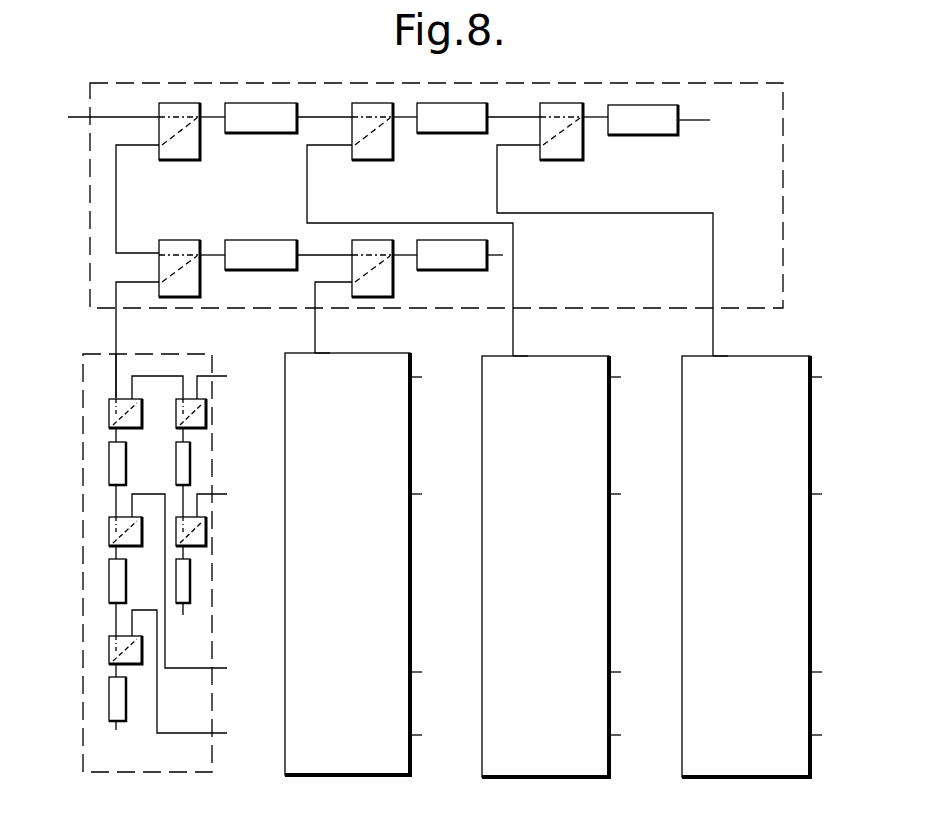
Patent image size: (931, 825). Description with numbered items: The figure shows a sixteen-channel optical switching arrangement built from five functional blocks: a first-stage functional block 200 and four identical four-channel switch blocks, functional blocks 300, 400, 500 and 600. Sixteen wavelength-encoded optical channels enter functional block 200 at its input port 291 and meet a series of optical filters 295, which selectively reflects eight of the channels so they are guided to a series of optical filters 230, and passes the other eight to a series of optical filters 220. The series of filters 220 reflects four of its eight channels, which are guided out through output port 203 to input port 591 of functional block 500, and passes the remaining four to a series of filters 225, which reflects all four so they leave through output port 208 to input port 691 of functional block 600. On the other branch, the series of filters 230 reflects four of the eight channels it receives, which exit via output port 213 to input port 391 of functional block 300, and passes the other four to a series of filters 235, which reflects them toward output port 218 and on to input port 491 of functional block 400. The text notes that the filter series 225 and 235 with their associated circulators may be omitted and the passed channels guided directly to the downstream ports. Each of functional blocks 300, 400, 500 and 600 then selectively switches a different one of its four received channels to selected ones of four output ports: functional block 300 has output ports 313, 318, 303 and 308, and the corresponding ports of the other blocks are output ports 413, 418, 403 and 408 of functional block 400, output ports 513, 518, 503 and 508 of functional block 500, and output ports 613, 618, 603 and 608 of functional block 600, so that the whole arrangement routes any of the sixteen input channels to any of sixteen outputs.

The functional block 200 is at (752, 187).
The input port 291 is at (90, 117).
The series of optical filters 295 is at (263, 125).
The series of optical filters 220 is at (452, 123).
The series of optical filters 225 is at (636, 123).
The series of optical filters 230 is at (288, 263).
The series of optical filters 235 is at (436, 263).
The output port 213 is at (114, 303).
The output port 218 is at (314, 318).
The output port 203 is at (512, 312).
The output port 208 is at (712, 311).
The functional block 300 is at (138, 763).
The input port 391 is at (117, 356).
The output port 313 is at (219, 378).
The output port 318 is at (219, 496).
The output port 303 is at (219, 667).
The output port 308 is at (219, 735).
The functional block 400 is at (338, 767).
The input port 491 is at (316, 352).
The output port 413 is at (421, 378).
The output port 418 is at (421, 495).
The output port 403 is at (420, 671).
The output port 408 is at (421, 736).
The functional block 500 is at (537, 767).
The input port 591 is at (514, 355).
The output port 513 is at (620, 378).
The output port 518 is at (620, 495).
The output port 503 is at (619, 671).
The output port 508 is at (620, 736).
The functional block 600 is at (737, 767).
The input port 691 is at (714, 355).
The output port 613 is at (821, 378).
The output port 618 is at (821, 495).
The output port 603 is at (820, 671).
The output port 608 is at (821, 736).